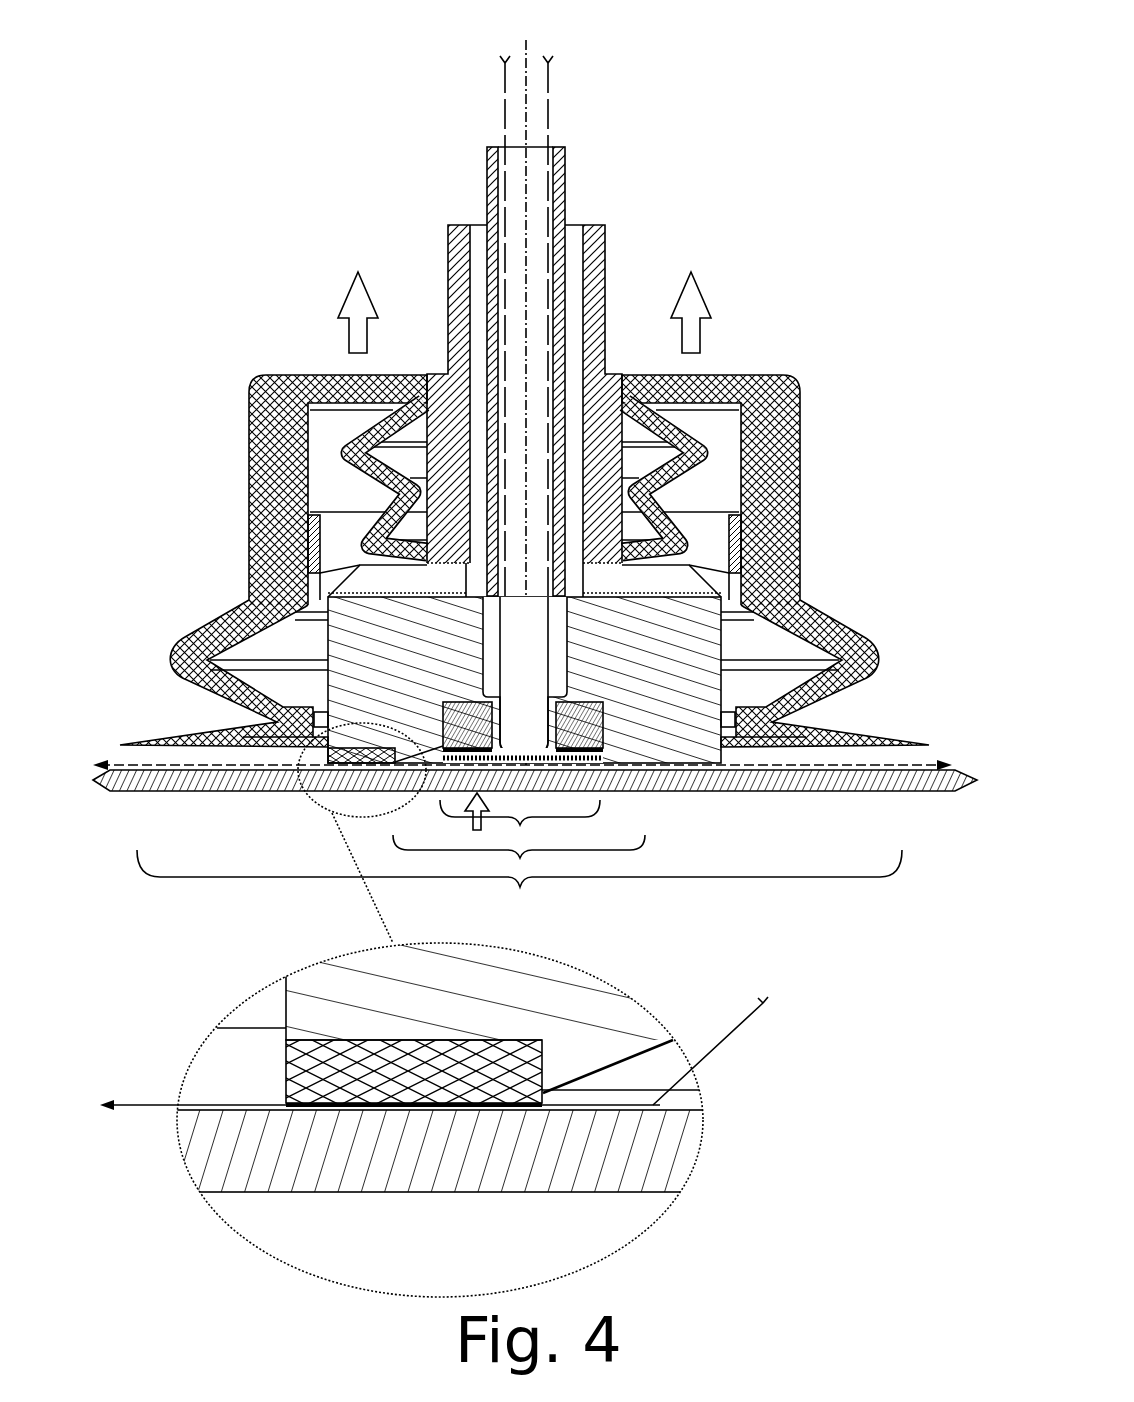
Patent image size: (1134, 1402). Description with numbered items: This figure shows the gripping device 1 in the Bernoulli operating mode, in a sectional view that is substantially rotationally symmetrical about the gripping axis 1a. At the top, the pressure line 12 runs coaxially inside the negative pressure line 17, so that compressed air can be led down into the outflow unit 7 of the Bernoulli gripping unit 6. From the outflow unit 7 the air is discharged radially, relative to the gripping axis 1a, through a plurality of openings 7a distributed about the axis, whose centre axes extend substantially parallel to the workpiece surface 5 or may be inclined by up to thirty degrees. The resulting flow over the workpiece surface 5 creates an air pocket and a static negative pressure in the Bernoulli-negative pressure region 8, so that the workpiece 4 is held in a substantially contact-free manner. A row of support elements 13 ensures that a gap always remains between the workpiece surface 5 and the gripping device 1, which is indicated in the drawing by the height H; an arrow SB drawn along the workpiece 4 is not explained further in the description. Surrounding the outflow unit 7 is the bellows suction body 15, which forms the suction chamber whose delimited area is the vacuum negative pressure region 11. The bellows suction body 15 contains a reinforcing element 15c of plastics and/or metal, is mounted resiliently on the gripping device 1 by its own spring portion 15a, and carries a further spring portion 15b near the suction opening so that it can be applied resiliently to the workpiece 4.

The gripping device 1 is at (543, 385).
The gripping axis 1a is at (527, 55).
The pressure line 12 is at (537, 165).
The negative pressure line 17 is at (477, 242).
The bellows suction body 15 is at (777, 481).
The spring portion 15a is at (707, 455).
The spring portion 15b is at (853, 643).
The reinforcing element 15c is at (303, 540).
The workpiece 4 is at (207, 792).
The workpiece surface 5 is at (108, 755).
The Bernoulli gripping unit 6 is at (757, 848).
The outflow unit 7 is at (520, 826).
The openings 7a is at (585, 763).
The Bernoulli-negative pressure region 8 is at (522, 860).
The vacuum negative pressure region 11 is at (520, 888).
The support elements 13 is at (328, 1072).
The gap height H is at (473, 830).
The substrate movement direction SB is at (128, 1085).